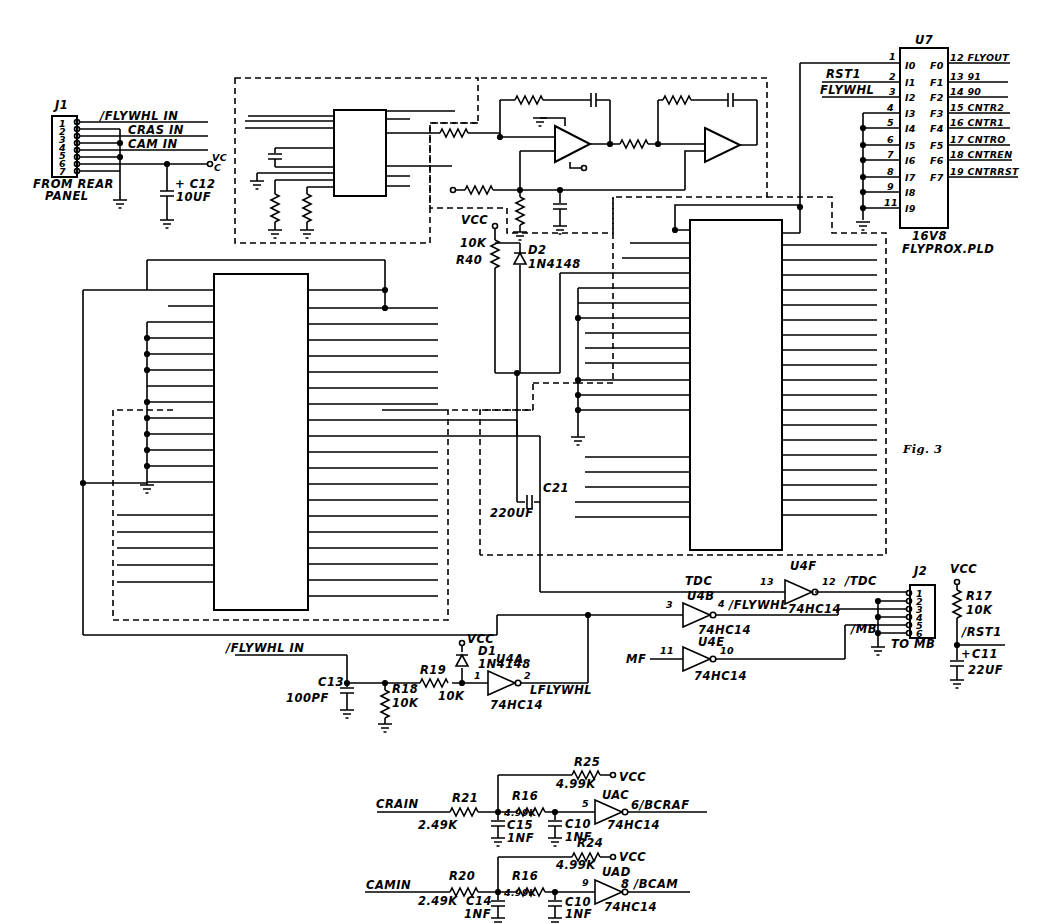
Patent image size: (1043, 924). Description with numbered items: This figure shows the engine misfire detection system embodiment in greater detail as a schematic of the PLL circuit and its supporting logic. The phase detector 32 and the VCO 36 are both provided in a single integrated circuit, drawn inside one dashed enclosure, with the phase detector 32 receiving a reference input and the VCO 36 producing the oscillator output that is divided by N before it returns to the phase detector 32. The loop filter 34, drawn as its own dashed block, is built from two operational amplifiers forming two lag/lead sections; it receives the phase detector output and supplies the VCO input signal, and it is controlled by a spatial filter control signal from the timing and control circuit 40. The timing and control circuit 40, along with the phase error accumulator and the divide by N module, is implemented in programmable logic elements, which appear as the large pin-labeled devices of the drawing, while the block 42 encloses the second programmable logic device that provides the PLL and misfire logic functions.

The phase detector 32 is at (395, 149).
The VCO 36 is at (292, 80).
The loop filter 34 is at (650, 80).
The timing and control circuit 40 is at (113, 437).
The programmable logic device U10 (EP910 PLL MFPLD) 42 is at (888, 341).